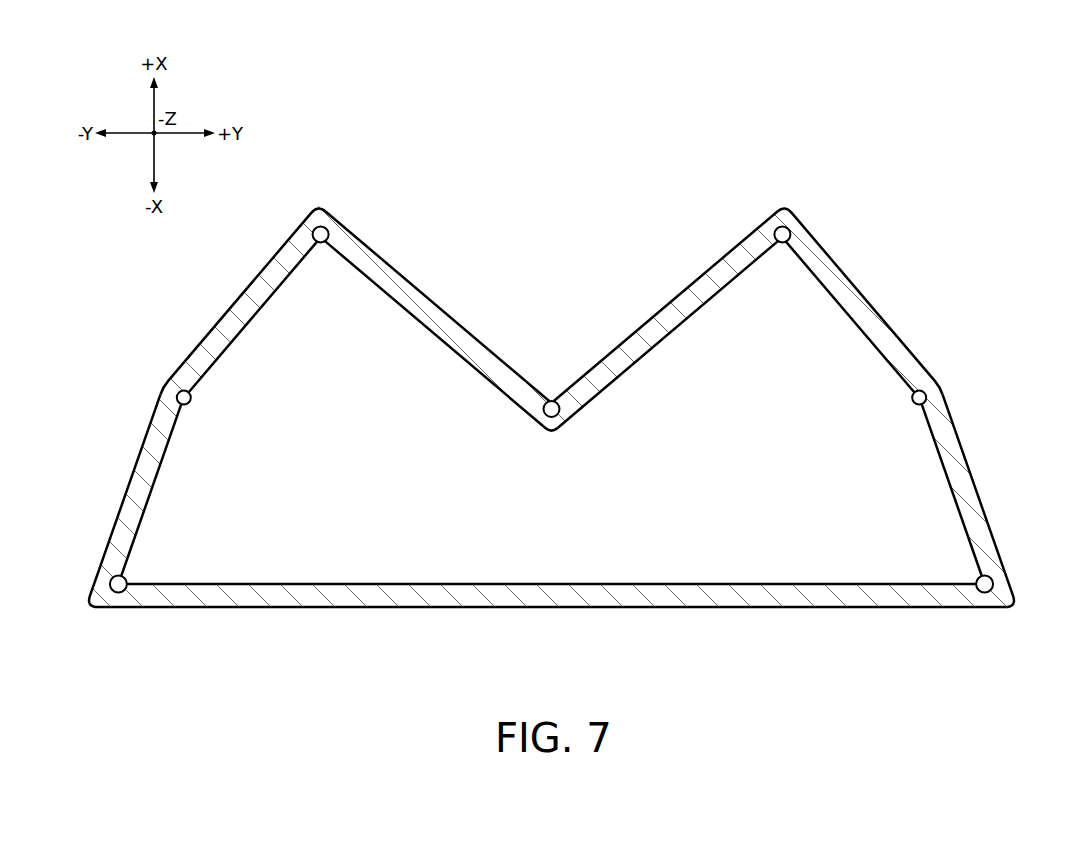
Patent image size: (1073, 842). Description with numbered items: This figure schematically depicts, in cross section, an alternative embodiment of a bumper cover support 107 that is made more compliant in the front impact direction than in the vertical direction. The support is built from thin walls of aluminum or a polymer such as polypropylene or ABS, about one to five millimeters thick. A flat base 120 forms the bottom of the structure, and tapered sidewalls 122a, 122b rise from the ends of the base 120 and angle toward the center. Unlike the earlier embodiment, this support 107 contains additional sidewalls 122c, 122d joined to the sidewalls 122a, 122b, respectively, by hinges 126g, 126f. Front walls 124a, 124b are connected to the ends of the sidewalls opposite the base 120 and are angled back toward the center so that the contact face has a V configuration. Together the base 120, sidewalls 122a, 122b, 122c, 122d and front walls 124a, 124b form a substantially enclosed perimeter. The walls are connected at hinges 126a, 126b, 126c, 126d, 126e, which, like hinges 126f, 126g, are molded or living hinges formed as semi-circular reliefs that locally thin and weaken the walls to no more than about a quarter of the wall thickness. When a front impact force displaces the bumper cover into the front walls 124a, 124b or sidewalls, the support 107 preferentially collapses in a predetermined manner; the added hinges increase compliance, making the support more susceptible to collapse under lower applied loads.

The bumper cover support 107 is at (808, 170).
The base 120 is at (330, 608).
The sidewall 122a is at (140, 470).
The sidewall 122b is at (963, 470).
The additional sidewall 122c is at (222, 317).
The additional sidewall 122d is at (881, 317).
The front wall 124a is at (480, 302).
The front wall 124b is at (658, 312).
The hinge 126a is at (125, 578).
The hinge 126b is at (320, 242).
The hinge 126c is at (551, 401).
The hinge 126d is at (782, 242).
The hinge 126e is at (978, 578).
The hinge 126f is at (913, 402).
The hinge 126g is at (190, 402).